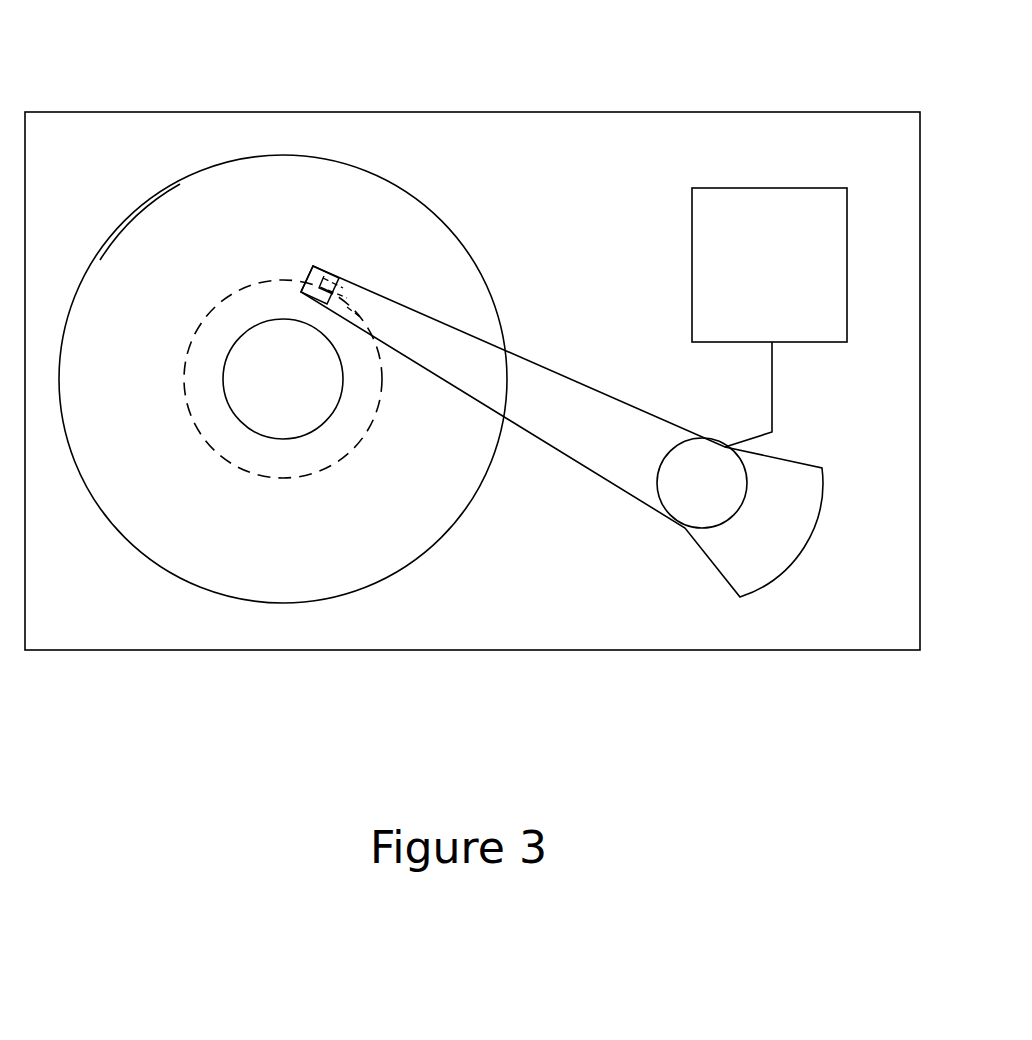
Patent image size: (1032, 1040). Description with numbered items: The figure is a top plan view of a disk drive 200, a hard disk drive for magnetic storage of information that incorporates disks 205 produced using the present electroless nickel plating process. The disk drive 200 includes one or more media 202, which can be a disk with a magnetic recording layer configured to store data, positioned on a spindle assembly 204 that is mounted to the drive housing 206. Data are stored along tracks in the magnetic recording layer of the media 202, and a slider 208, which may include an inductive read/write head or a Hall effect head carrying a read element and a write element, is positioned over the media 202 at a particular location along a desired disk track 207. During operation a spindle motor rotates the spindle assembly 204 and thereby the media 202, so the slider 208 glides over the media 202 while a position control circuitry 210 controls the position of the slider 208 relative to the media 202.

The disk drive 200 is at (226, 97).
The media 202 is at (418, 198).
The spindle assembly 204 is at (262, 382).
The disks 205 is at (148, 220).
The drive housing 206 is at (622, 112).
The disk track 207 is at (255, 287).
The slider 208 is at (356, 283).
The position control circuitry 210 is at (747, 280).